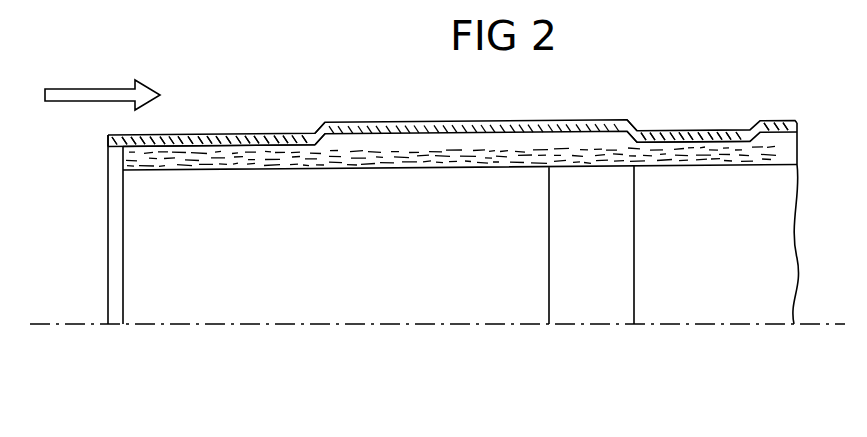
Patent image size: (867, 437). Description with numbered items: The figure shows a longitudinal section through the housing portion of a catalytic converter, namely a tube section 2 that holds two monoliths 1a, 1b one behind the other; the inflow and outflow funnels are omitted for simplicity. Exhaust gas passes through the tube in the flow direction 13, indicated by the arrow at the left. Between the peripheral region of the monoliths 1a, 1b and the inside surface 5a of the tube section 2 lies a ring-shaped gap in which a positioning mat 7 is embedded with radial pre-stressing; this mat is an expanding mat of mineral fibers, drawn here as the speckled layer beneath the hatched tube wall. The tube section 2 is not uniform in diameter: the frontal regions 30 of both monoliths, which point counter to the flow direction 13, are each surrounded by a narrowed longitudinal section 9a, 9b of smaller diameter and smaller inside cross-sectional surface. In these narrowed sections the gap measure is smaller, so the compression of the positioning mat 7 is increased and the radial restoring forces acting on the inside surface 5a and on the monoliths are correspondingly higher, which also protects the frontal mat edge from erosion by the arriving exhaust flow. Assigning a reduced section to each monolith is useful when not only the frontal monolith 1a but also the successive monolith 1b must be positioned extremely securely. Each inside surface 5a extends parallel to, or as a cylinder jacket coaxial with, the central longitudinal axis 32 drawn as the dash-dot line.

The flow direction 13 is at (93, 96).
The tube section 2 is at (358, 128).
The positioning mat 7 is at (472, 153).
The narrowed longitudinal section 9a is at (227, 135).
The narrowed longitudinal section 9b is at (705, 135).
The frontal regions of the monoliths 30 is at (275, 133).
The inside surface of the tube section 5a is at (175, 155).
The monolith 1a is at (275, 293).
The monolith 1b is at (703, 290).
The central longitudinal axis 32 is at (80, 327).